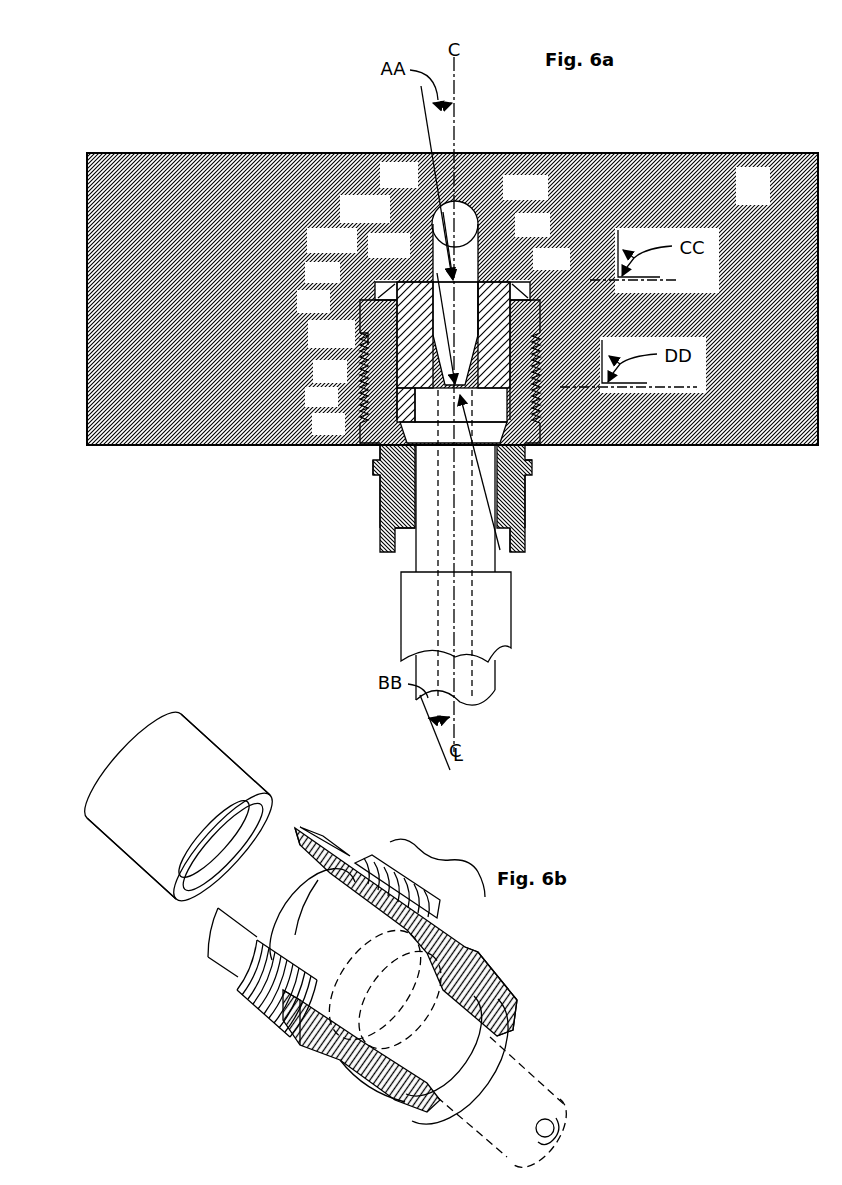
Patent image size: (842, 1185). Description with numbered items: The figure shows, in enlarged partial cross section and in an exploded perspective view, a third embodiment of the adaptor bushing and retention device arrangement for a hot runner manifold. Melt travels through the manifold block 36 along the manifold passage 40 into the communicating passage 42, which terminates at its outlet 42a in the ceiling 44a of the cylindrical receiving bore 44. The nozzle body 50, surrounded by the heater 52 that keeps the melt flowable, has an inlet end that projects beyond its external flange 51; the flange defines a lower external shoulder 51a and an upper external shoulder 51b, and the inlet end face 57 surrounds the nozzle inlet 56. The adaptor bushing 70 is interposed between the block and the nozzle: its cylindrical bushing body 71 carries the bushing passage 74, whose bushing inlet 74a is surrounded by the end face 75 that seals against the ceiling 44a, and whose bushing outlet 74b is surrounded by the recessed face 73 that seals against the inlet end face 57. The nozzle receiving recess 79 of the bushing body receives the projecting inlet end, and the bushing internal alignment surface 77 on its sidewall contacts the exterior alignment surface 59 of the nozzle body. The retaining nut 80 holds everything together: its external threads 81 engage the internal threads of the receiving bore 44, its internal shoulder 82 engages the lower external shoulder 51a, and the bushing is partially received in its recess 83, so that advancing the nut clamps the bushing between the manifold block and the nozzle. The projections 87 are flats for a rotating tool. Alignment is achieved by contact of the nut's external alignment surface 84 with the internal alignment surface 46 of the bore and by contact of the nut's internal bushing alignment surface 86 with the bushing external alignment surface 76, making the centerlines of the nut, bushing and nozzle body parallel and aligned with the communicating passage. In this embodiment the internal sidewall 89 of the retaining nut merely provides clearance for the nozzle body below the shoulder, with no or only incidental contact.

In FIG. 6a, the manifold block 36 is at (742, 196).
In FIG. 6a, the manifold passage 40 is at (440, 205).
In FIG. 6a, the communicating passage 42 is at (434, 212).
In FIG. 6a, the outlet of communicating passage 42a is at (479, 260).
In FIG. 6a, the receiving bore 44 is at (384, 296).
In FIG. 6a, the ceiling of receiving bore 44a is at (380, 288).
In FIG. 6a, the internal alignment surface 46 is at (364, 326).
In FIG. 6a, the nozzle body 50 is at (426, 546).
In FIG. 6a, the external flange 51 is at (520, 525).
In FIG. 6b, the external flange 51 is at (340, 1063).
In FIG. 6a, the lower external shoulder 51a is at (395, 490).
In FIG. 6b, the lower external shoulder 51a is at (356, 1084).
In FIG. 6a, the upper external shoulder 51b is at (390, 470).
In FIG. 6a, the heater 52 is at (420, 596).
In FIG. 6a, the nozzle inlet 56 is at (500, 550).
In FIG. 6a, the inlet end face 57 is at (520, 505).
In FIG. 6a, the exterior alignment surface 59 is at (370, 392).
In FIG. 6b, the exterior alignment surface 59 is at (294, 1030).
In FIG. 6a, the adaptor bushing 70 is at (535, 445).
In FIG. 6b, the adaptor bushing 70 is at (117, 861).
In FIG. 6b, the bushing body 71 is at (153, 795).
In FIG. 6a, the recessed face 73 is at (522, 490).
In FIG. 6b, the recessed face 73 is at (296, 831).
In FIG. 6a, the bushing passage 74 is at (430, 320).
In FIG. 6a, the bushing inlet 74a is at (434, 300).
In FIG. 6a, the bushing outlet 74b is at (404, 345).
In FIG. 6a, the end face 75 is at (481, 300).
In FIG. 6a, the bushing external alignment surface 76 is at (366, 378).
In FIG. 6b, the bushing external alignment surface 76 is at (215, 783).
In FIG. 6b, the bushing internal alignment surface 77 is at (226, 856).
In FIG. 6b, the nozzle receiving recess 79 is at (196, 880).
In FIG. 6a, the retaining nut 80 is at (380, 447).
In FIG. 6b, the threads 81 is at (456, 848).
In FIG. 6a, the internal shoulder 82 is at (400, 515).
In FIG. 6b, the internal shoulder 82 is at (470, 966).
In FIG. 6b, the recess 83 is at (300, 893).
In FIG. 6a, the external alignment surface 84 is at (519, 300).
In FIG. 6b, the external alignment surface 84 is at (332, 850).
In FIG. 6a, the internal bushing alignment surface 86 is at (420, 412).
In FIG. 6b, the internal bushing alignment surface 86 is at (310, 932).
In FIG. 6a, the projections 87 is at (530, 470).
In FIG. 6b, the projections 87 is at (487, 977).
In FIG. 6b, the internal sidewall 89 is at (412, 1102).